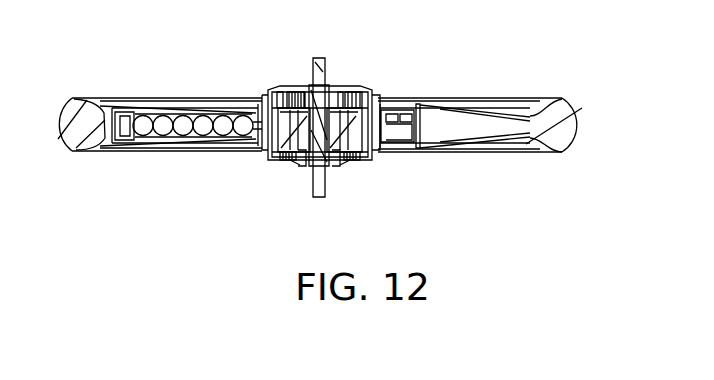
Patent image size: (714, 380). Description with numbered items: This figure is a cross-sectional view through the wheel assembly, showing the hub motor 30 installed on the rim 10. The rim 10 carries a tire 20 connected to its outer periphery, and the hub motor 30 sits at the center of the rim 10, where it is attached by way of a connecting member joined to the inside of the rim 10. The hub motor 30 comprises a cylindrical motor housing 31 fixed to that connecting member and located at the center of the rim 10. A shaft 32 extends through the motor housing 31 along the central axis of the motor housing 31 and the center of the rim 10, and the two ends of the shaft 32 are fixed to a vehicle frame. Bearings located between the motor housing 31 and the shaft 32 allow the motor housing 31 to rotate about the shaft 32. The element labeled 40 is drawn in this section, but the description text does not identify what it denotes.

The rim 10 is at (531, 117).
The tire 20 is at (562, 124).
The hub motor 30 is at (352, 165).
The motor housing 31 is at (264, 165).
The shaft 32 is at (322, 68).
The ball stack arm 40 is at (207, 96).